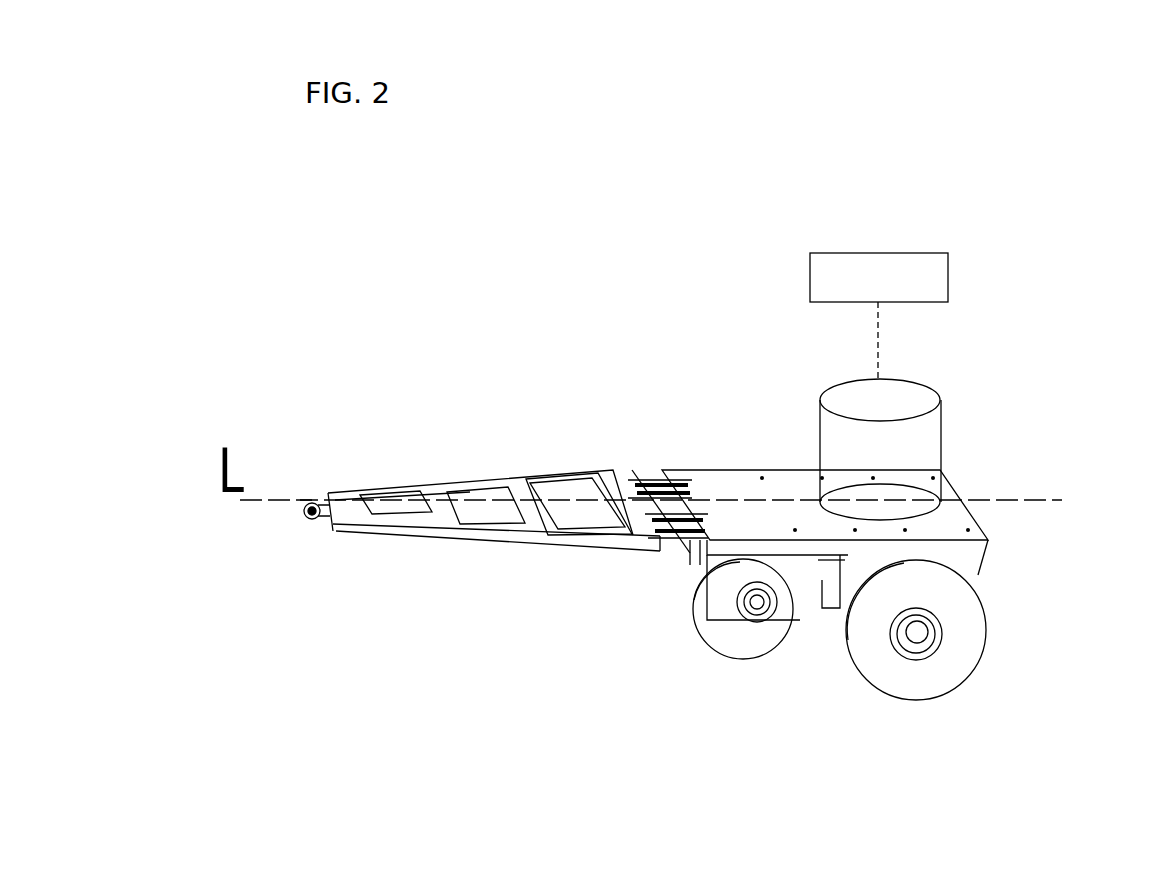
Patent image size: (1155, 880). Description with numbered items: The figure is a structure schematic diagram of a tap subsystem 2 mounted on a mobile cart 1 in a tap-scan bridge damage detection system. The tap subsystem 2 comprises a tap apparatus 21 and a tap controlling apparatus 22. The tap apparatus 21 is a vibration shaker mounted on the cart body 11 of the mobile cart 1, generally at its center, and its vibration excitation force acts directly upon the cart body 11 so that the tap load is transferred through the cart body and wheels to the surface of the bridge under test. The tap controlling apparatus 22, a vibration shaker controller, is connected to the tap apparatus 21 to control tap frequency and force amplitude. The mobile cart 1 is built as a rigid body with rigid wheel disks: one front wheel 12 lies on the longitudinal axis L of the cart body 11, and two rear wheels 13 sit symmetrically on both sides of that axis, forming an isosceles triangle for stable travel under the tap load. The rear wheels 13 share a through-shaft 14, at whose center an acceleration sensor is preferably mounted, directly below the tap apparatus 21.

The mobile cart 1 is at (560, 637).
The cart body 11 is at (720, 487).
The front wheel 12 is at (707, 647).
The rear wheels 13 is at (970, 650).
The through-shaft 14 is at (922, 653).
The tap subsystem 2 is at (998, 297).
The tap apparatus 21 is at (941, 447).
The tap controlling apparatus 22 is at (810, 263).